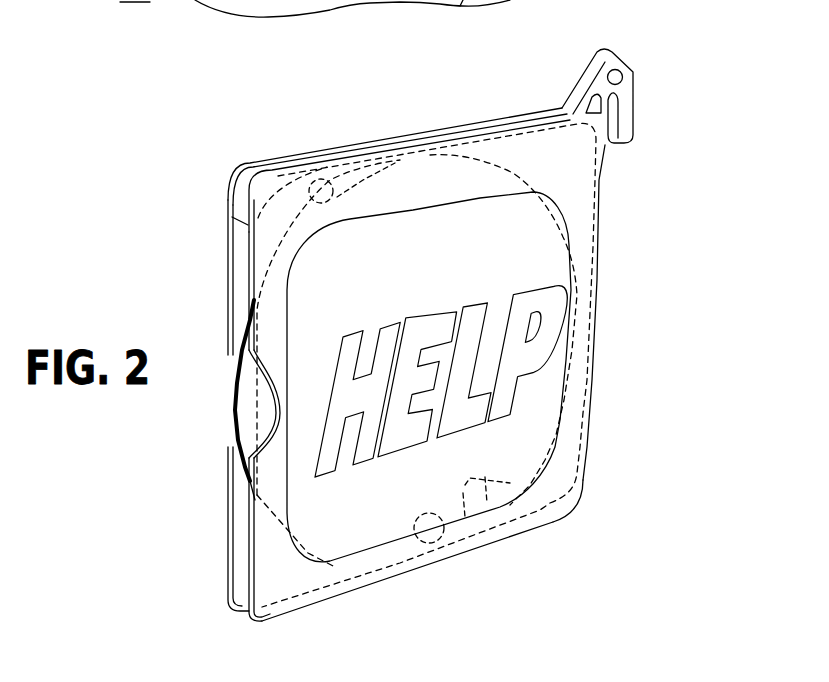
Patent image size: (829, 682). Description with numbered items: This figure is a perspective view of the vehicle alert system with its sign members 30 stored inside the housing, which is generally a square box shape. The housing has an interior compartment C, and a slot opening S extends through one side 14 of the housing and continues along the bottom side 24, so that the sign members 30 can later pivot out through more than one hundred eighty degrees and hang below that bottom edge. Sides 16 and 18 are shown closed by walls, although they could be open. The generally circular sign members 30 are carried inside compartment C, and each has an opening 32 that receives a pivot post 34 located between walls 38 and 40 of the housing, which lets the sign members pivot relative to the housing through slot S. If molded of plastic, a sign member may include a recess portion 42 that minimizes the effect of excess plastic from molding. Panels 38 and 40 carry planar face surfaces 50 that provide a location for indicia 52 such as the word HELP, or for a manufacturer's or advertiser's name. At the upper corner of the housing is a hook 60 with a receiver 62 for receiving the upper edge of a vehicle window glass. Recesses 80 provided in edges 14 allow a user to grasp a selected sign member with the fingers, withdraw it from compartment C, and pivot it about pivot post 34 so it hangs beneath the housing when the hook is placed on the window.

The side 14 is at (238, 233).
The side 16 is at (395, 143).
The side 18 is at (601, 204).
The bottom side 24 is at (418, 568).
The sign members 30 is at (242, 421).
The opening 32 is at (414, 518).
The pivot post 34 is at (447, 557).
The wall 38 is at (576, 493).
The wall 40 is at (277, 160).
The recess portion 42 is at (517, 537).
The planar face surface 50 is at (572, 167).
The indicia 52 is at (448, 294).
The hook 60 is at (657, 57).
The receiver 62 is at (607, 135).
The recesses 80 is at (265, 378).
The interior compartment C is at (241, 259).
The slot opening S is at (249, 523).